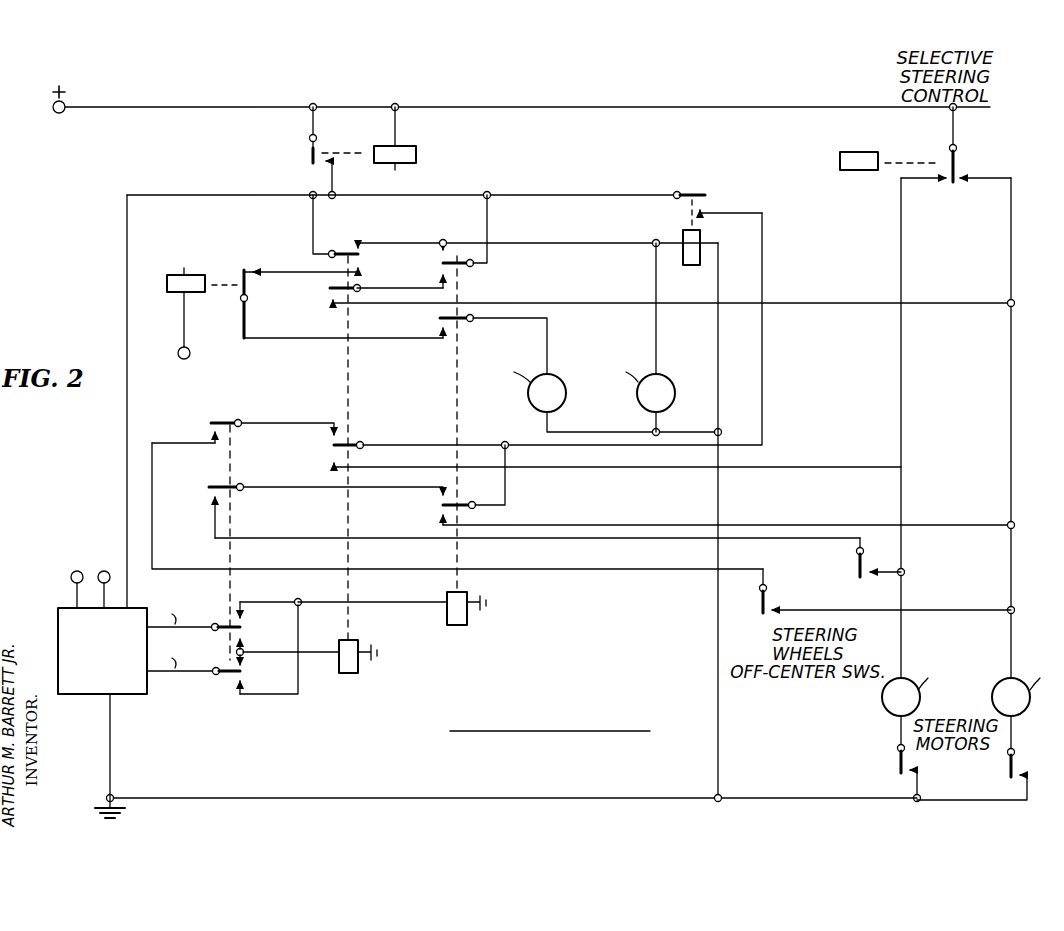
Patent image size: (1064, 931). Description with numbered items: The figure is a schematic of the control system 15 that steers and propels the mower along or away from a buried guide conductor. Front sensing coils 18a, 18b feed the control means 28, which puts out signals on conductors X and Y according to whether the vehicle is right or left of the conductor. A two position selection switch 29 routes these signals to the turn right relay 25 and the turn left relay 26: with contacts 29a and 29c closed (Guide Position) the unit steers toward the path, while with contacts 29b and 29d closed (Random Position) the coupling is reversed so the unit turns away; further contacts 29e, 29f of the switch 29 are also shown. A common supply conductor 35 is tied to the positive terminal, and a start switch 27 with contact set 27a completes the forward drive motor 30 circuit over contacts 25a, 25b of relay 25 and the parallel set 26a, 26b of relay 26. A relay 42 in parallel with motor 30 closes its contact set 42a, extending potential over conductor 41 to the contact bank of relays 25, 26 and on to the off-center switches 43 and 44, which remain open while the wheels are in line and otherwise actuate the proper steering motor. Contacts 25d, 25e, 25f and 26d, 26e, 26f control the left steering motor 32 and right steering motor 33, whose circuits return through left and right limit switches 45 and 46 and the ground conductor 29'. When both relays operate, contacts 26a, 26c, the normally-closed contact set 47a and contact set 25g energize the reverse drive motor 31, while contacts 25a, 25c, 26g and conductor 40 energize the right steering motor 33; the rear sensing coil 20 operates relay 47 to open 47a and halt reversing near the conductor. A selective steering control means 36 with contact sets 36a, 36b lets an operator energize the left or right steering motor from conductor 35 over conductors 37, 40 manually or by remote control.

The control system 15 is at (388, 463).
The sensing coil 18a is at (77, 571).
The sensing coil 18b is at (114, 571).
The rear sensing coil 20 is at (178, 354).
The turn right relay 25 is at (449, 598).
The contact of relay 25 25a is at (486, 270).
The contact of relay 25 25b is at (450, 251).
The contact of relay 25 25c is at (436, 276).
The contact of relay 25 25d is at (467, 501).
The contact of relay 25 25e is at (436, 501).
The contact of relay 25 25f is at (430, 515).
The contact set of relay 25 25g is at (438, 319).
The turn left relay 26 is at (355, 640).
The contact of relay 26 26a is at (352, 250).
The contact of relay 26 26b is at (364, 255).
The contact of relay 26 26c is at (364, 268).
The contact of relay 26 26d is at (362, 448).
The contact of relay 26 26e is at (330, 444).
The contact of relay 26 26f is at (322, 457).
The contact of relay 26 26g is at (328, 291).
The start switch 27 is at (411, 151).
The contact set of start switch 27a is at (314, 168).
The control means 28 is at (102, 713).
The two position selection switch 29 is at (243, 680).
The contact of switch 29 29a is at (259, 628).
The contact of switch 29 29b is at (260, 633).
The contact of switch 29 29c is at (260, 672).
The contact of switch 29 29d is at (260, 680).
The switch contact 29e is at (204, 427).
The switch contact 29f is at (208, 490).
The ground conductor 29' is at (512, 809).
The forward drive motor 30 is at (620, 337).
The reverse drive motor 31 is at (594, 394).
The left steering motor 32 is at (917, 687).
The right steering motor 33 is at (1028, 687).
The common supply conductor 35 is at (550, 108).
The selective steering control means 36 is at (861, 151).
The contact set of steering control 36 36a is at (946, 186).
The contact set of steering control 36 36b is at (960, 183).
The left steering line 37 is at (903, 337).
The conductor 40 is at (1013, 335).
The conductor 41 is at (550, 196).
The relay 42 is at (680, 232).
The contact set of relay 42 42a is at (716, 202).
The off-center switch 43 is at (768, 602).
The off-center switch 44 is at (865, 567).
The left limit switch 45 is at (902, 780).
The right limit switch 46 is at (1016, 780).
The relay 47 is at (169, 270).
The normally-closed contact set 47a is at (245, 270).